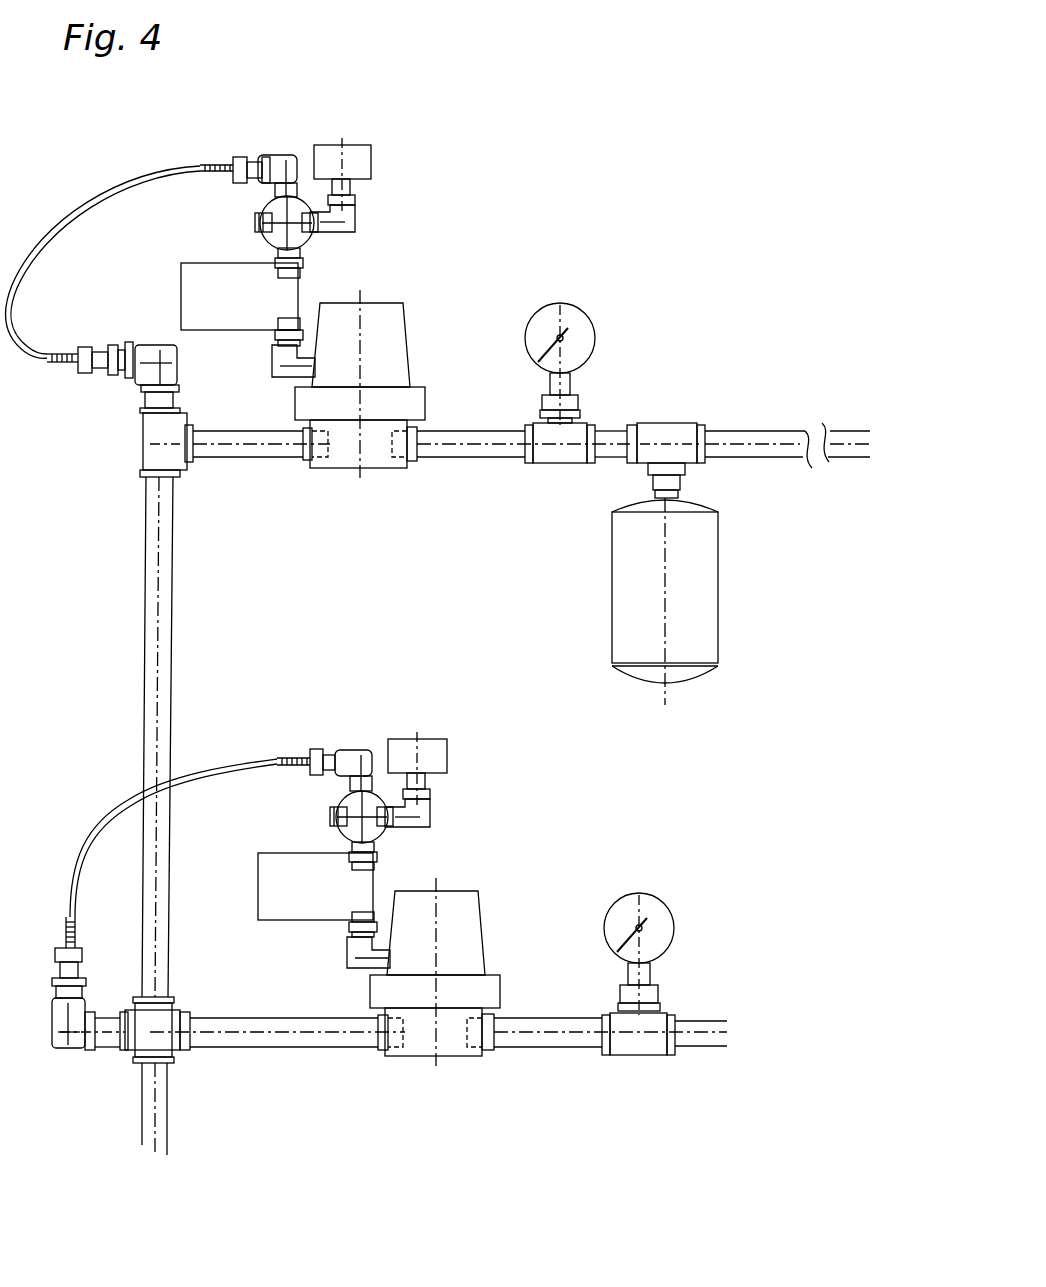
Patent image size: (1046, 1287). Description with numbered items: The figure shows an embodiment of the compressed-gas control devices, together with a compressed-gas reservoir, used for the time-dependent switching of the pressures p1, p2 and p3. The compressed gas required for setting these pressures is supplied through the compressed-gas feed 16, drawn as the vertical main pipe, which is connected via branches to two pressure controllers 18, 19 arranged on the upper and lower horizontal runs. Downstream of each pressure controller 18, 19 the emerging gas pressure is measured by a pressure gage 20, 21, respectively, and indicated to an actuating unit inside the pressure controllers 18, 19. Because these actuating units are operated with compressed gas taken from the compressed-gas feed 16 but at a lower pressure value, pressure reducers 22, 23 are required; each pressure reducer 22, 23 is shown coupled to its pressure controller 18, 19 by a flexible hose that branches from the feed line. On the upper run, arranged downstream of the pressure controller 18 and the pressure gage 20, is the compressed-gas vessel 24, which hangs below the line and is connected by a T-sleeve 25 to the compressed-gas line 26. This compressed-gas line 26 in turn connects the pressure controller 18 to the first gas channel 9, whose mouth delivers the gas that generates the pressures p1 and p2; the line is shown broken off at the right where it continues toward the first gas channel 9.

The first gas channel 9 is at (845, 440).
The compressed-gas feed 16 is at (142, 1100).
The pressure controller 18 is at (407, 347).
The pressure controller 19 is at (483, 915).
The pressure gage 20 is at (582, 310).
The pressure gage 21 is at (637, 893).
The pressure reducer 22 is at (352, 228).
The pressure reducer 23 is at (428, 817).
The compressed-gas vessel 24 is at (705, 593).
The T-sleeve 25 is at (675, 433).
The compressed-gas line 26 is at (742, 433).